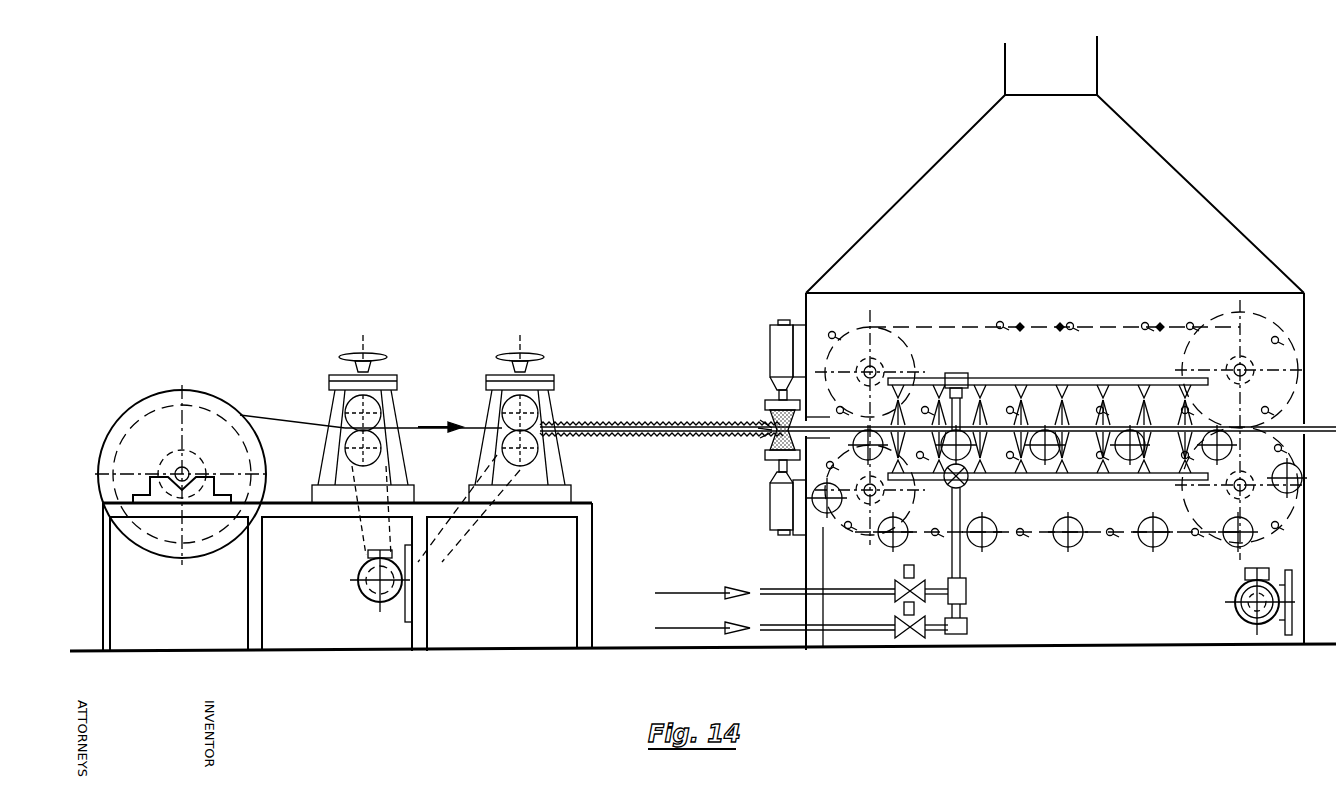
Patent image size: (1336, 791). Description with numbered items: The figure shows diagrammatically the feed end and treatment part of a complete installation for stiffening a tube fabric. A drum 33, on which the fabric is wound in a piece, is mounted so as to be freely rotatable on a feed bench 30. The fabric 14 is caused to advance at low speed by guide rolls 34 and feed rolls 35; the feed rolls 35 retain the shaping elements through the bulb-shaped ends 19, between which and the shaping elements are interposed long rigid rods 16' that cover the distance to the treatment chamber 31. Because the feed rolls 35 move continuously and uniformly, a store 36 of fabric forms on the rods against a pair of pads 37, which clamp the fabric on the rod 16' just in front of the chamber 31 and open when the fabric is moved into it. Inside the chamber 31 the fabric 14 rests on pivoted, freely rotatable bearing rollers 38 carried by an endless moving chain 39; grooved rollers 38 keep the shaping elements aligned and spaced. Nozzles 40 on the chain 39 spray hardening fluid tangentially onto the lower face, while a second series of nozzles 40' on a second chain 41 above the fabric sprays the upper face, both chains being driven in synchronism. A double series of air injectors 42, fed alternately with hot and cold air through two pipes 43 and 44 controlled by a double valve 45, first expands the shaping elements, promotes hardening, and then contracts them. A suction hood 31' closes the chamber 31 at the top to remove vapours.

The fabric 14 is at (242, 415).
The long rigid rods 16' is at (690, 460).
The bulb-shaped ends 19 is at (500, 428).
The feed bench 30 is at (583, 556).
The treatment chamber 31 is at (1009, 471).
The suction hood 31' is at (1055, 164).
The drum 33 is at (133, 415).
The guide rolls 34 is at (383, 445).
The feed rolls 35 is at (540, 445).
The store of fabric 36 is at (650, 425).
The pads 37 is at (770, 427).
The bearing rollers 38 is at (1055, 518).
The endless moving chain 39 is at (1040, 535).
The nozzles 40 is at (1156, 564).
The second series of nozzles 40' is at (1090, 294).
The second chain 41 is at (1000, 320).
The air injectors 42 is at (1125, 388).
The pipe 43 is at (807, 620).
The pipe 44 is at (806, 584).
The double valve 45 is at (903, 608).